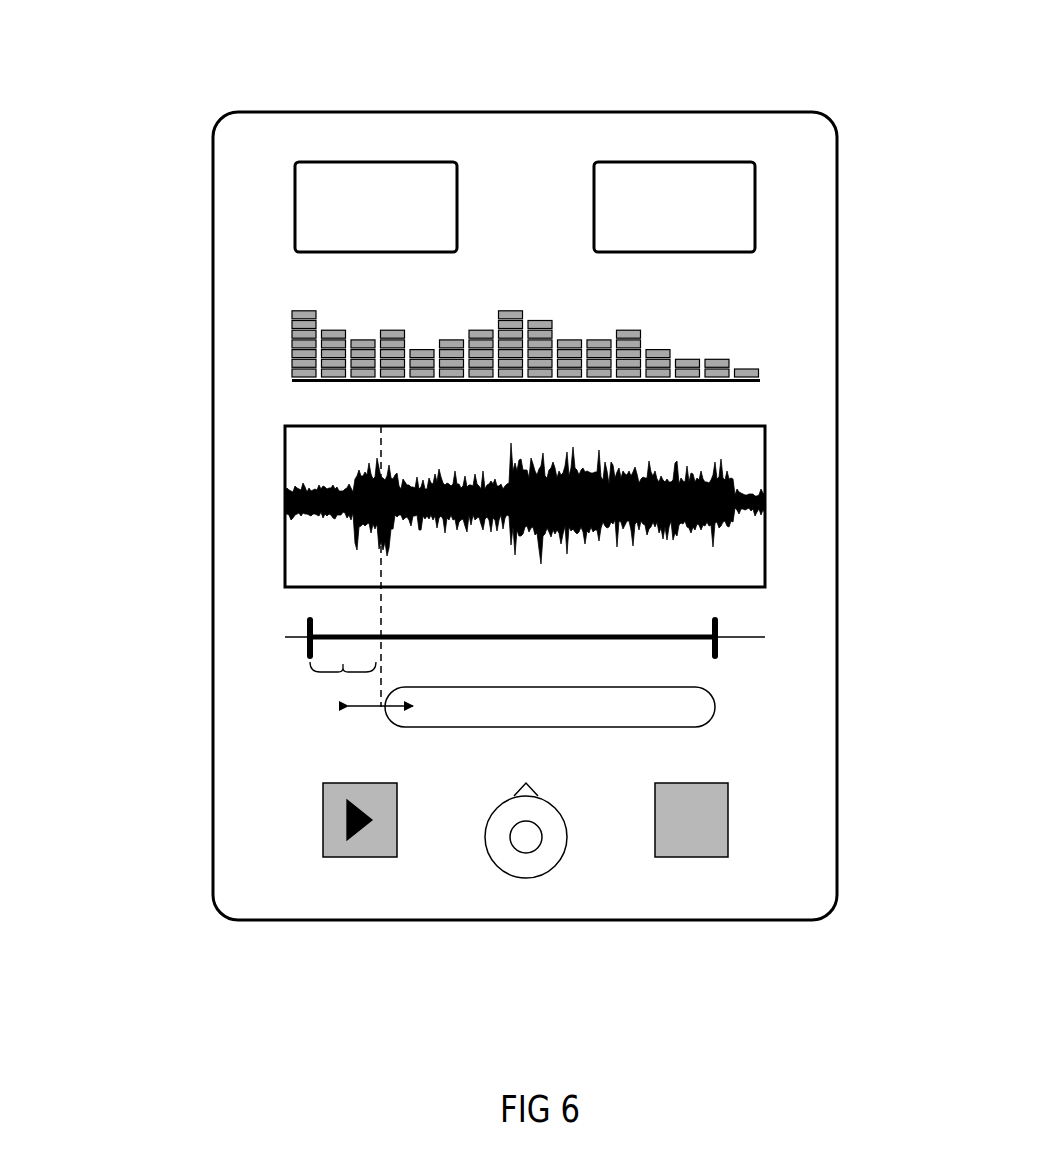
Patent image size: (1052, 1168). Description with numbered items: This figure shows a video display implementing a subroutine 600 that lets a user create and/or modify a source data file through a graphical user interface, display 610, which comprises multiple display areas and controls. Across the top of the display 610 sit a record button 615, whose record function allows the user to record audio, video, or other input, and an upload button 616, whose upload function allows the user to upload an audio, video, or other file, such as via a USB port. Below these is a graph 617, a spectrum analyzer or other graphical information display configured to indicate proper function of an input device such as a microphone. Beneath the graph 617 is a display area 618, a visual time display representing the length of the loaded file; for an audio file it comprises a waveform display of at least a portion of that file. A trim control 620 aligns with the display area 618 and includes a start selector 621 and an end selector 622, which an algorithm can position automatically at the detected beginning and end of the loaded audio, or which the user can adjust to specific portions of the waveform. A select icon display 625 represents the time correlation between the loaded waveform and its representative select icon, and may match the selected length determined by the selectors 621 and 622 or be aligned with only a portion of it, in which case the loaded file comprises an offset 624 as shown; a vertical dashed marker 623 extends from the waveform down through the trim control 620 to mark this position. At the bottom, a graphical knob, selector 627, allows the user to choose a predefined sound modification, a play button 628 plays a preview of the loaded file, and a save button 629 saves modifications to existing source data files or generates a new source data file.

The subroutine 600 is at (112, 63).
The display 610 is at (193, 97).
The record button 615 is at (393, 172).
The upload button 616 is at (698, 177).
The graph 617 is at (755, 340).
The display area 618 is at (753, 468).
The trim control 620 is at (782, 612).
The start selector 621 is at (307, 652).
The end selector 622 is at (718, 652).
The playback cursor 623 is at (380, 597).
The offset 624 is at (343, 663).
The select icon display 625 is at (697, 710).
The selector 627 is at (537, 857).
The play button 628 is at (368, 843).
The save button 629 is at (676, 845).